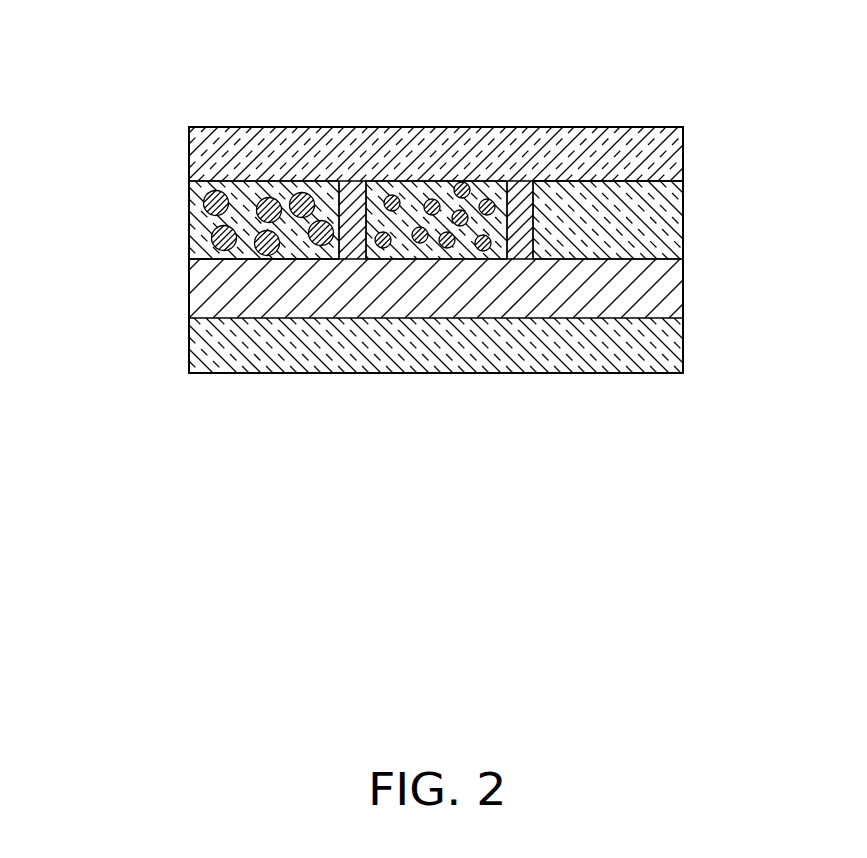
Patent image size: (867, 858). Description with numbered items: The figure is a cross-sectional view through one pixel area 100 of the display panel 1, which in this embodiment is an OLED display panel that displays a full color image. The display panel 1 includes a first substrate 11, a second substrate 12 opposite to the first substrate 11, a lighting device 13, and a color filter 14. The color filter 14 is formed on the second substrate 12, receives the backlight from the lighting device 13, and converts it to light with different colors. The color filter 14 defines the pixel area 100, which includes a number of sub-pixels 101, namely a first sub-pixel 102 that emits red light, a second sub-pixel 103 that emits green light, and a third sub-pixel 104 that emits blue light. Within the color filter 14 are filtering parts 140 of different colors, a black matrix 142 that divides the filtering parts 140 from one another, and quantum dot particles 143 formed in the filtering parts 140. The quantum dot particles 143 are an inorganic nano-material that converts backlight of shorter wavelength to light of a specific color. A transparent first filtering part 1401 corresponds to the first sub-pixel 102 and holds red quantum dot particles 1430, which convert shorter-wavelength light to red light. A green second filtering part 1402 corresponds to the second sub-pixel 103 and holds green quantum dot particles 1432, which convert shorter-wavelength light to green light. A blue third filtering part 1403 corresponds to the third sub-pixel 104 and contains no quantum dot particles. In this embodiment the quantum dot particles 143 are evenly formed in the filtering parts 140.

The display panel 1 is at (166, 62).
The pixel area 100 is at (437, 134).
The first sub-pixel 102 is at (352, 118).
The second sub-pixel 103 is at (518, 118).
The third sub-pixel 104 is at (604, 162).
The second substrate 12 is at (677, 150).
The sub-pixels 101 is at (677, 205).
The color filter 14 is at (407, 229).
The black matrix 142 is at (340, 190).
The filtering parts 140 is at (195, 199).
The quantum dot particles 143 is at (213, 242).
The first filtering part 1401 is at (192, 252).
The red quantum dot particles 1430 is at (329, 246).
The second filtering part 1402 is at (403, 245).
The green quantum dot particles 1432 is at (486, 251).
The third filtering part 1403 is at (598, 243).
The lighting device 13 is at (190, 293).
The first substrate 11 is at (190, 346).